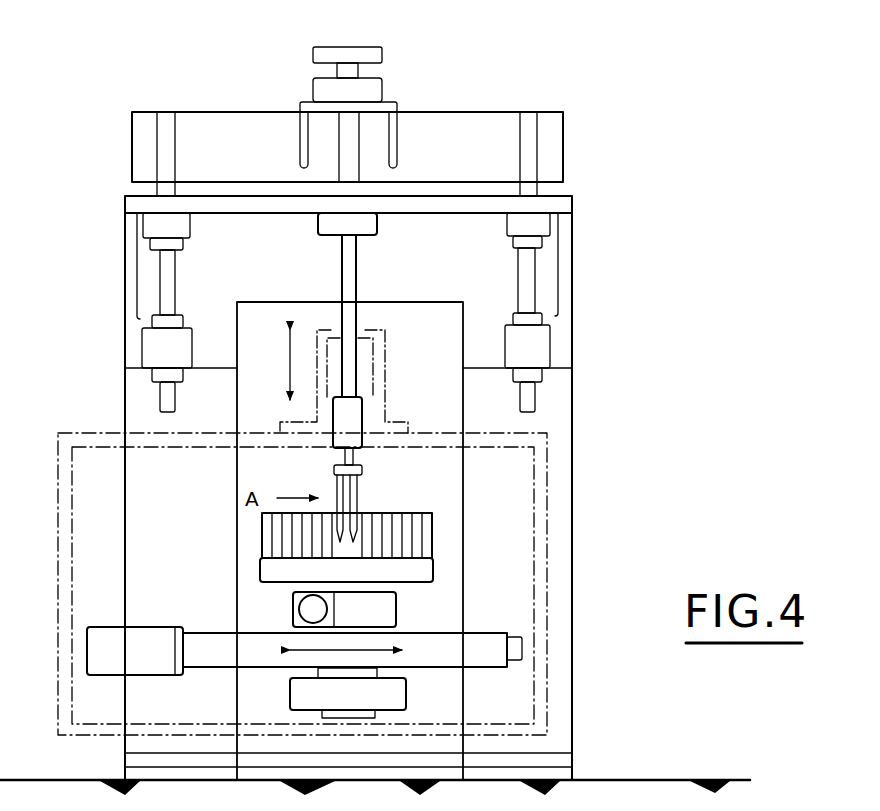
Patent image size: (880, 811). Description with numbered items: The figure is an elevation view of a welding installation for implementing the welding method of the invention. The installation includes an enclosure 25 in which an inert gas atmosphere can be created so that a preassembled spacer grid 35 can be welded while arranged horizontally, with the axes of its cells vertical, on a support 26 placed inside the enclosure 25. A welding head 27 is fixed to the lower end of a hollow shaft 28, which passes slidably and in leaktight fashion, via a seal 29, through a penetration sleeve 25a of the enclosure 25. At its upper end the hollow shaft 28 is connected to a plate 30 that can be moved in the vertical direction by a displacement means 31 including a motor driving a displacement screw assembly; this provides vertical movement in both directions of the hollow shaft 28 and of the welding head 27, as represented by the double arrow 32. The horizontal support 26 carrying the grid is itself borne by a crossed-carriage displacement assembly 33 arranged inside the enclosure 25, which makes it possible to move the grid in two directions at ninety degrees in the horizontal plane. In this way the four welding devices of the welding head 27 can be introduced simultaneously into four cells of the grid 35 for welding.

The enclosure 25 is at (548, 598).
The penetration sleeve 25a is at (385, 338).
The support 26 is at (437, 565).
The welding head 27 is at (334, 470).
The hollow shaft 28 is at (352, 269).
The seal 29 is at (366, 333).
The plate 30 is at (125, 206).
The displacement means 31 is at (368, 46).
The double arrow 32 is at (290, 362).
The crossed-carriage displacement assembly 33 is at (428, 678).
The grid 35 is at (438, 537).